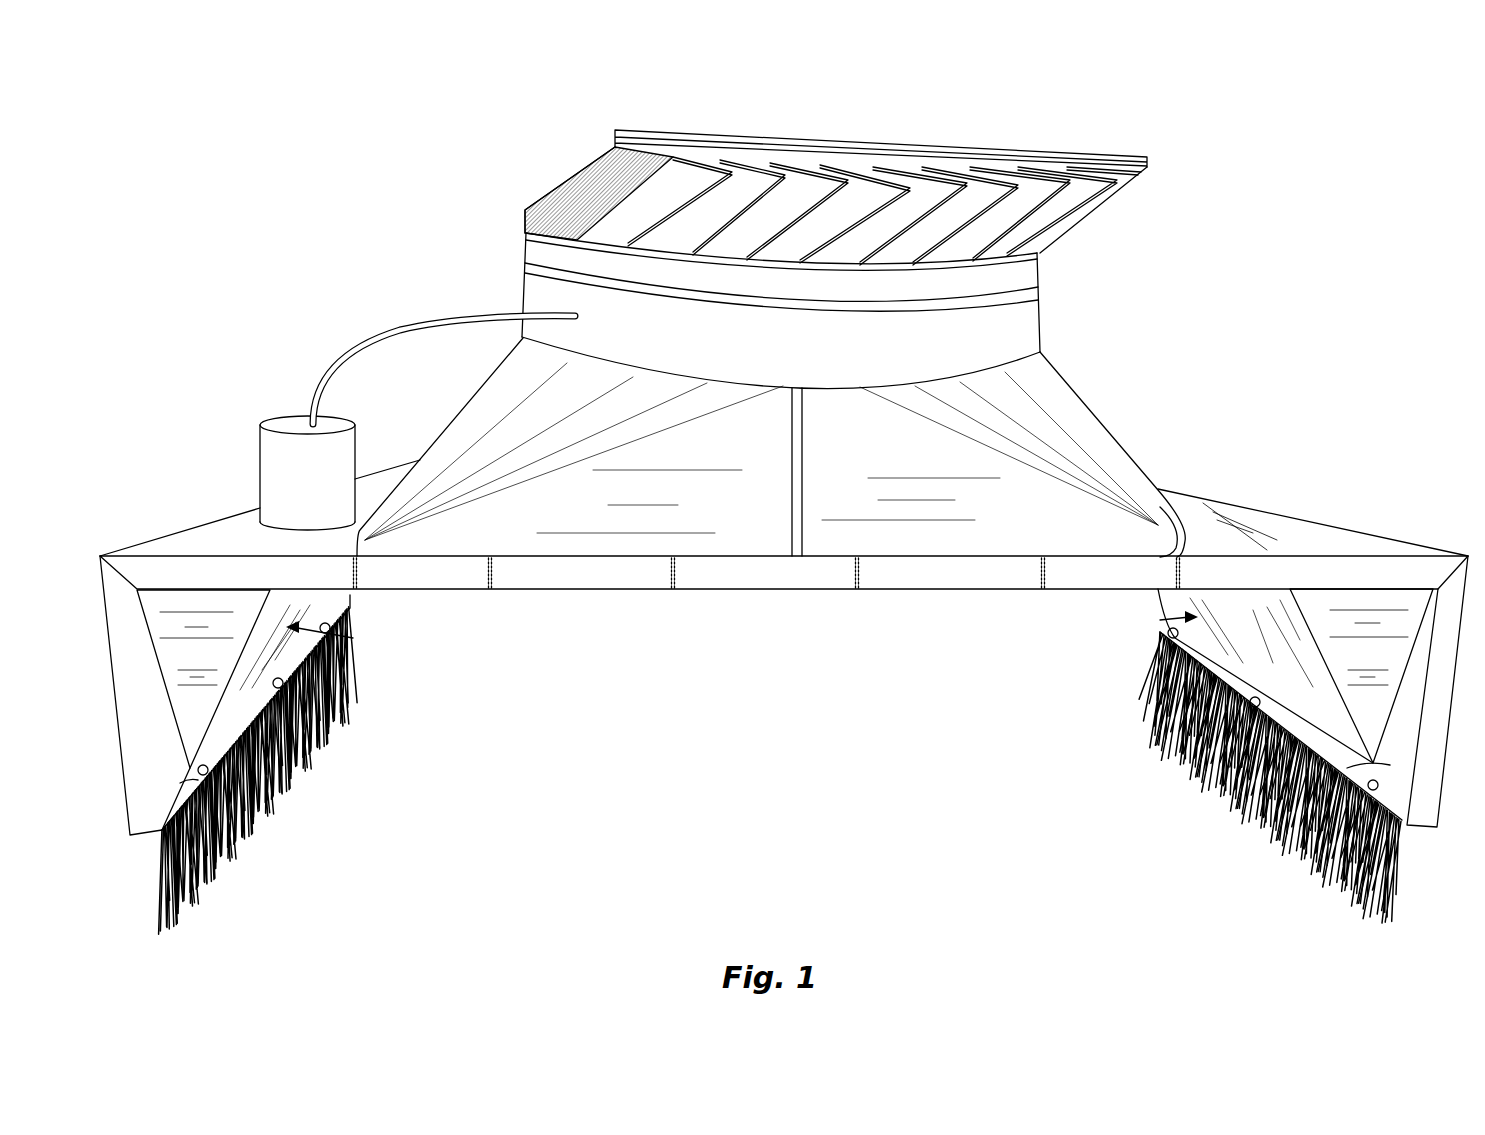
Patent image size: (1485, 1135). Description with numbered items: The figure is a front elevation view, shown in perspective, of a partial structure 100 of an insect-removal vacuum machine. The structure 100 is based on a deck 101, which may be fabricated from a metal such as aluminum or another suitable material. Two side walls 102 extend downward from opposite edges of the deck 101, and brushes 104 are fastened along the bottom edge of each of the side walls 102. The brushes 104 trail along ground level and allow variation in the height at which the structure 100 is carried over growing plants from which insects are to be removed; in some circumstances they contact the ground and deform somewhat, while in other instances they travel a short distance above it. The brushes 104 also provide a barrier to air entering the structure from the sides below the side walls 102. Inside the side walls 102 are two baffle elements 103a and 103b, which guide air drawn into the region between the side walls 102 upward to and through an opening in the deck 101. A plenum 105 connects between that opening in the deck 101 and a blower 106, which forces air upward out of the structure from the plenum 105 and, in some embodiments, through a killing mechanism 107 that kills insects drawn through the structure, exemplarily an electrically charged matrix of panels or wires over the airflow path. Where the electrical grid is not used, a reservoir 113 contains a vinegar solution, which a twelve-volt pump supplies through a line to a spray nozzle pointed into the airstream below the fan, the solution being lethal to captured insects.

The partial structure 100 is at (362, 277).
The deck 101 is at (255, 535).
The side walls 102 is at (262, 823).
The baffle element 103a is at (292, 627).
The baffle element 103b is at (1190, 617).
The brushes 104 is at (313, 750).
The plenum 105 is at (1097, 442).
The blower 106 is at (1017, 337).
The killing mechanism 107 is at (1073, 162).
The reservoir 113 is at (283, 420).